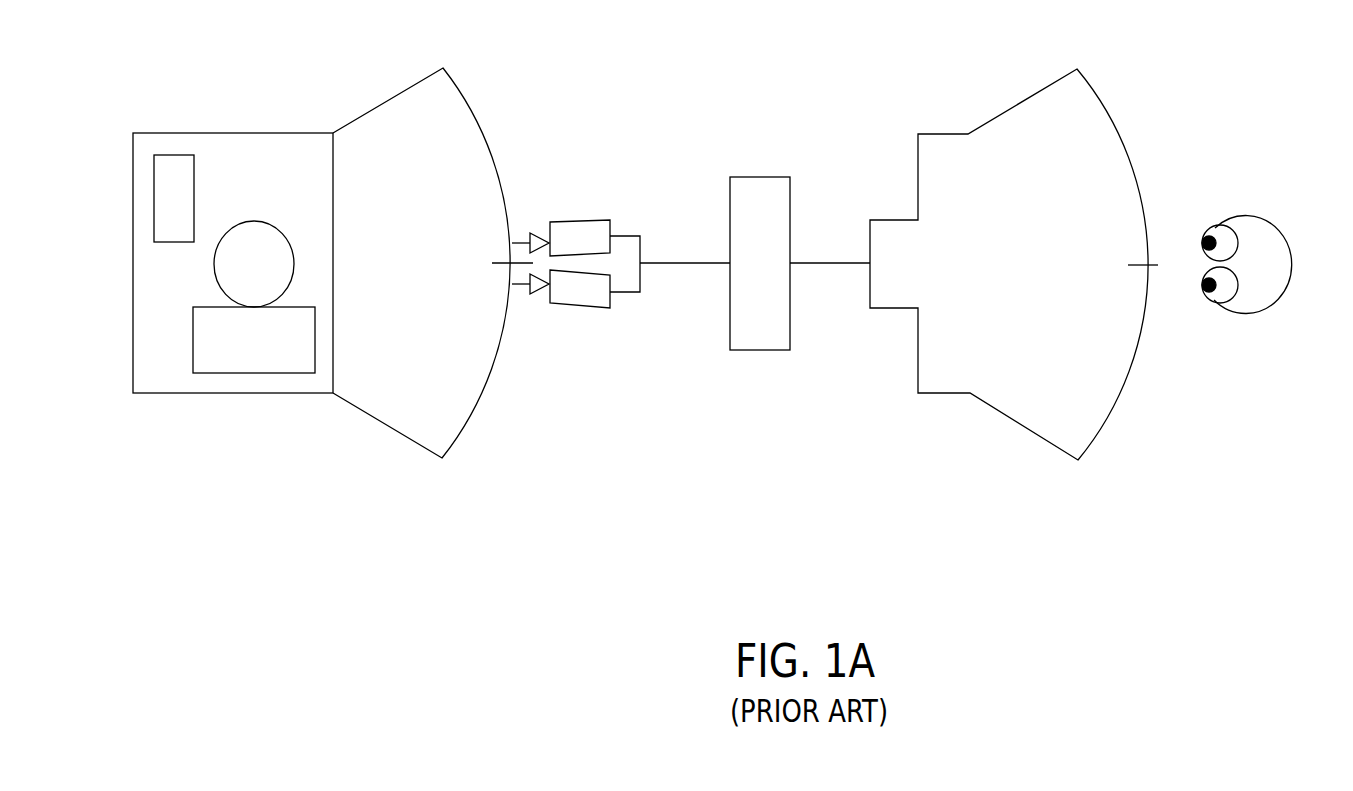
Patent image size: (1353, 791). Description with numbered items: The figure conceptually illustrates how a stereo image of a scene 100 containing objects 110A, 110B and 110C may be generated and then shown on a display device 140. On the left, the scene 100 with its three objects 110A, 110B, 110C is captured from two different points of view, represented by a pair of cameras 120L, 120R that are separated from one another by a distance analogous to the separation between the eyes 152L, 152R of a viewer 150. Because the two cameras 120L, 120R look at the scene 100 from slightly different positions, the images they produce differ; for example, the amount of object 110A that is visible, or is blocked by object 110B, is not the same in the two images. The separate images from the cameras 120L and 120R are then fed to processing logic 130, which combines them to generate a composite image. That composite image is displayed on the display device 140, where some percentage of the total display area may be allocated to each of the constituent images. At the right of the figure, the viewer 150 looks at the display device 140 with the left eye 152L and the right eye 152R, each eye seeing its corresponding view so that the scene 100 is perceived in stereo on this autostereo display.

The scene 100 is at (242, 100).
The object 110A is at (173, 155).
The object 110B is at (270, 221).
The object 110C is at (253, 373).
The camera 120R is at (575, 222).
The camera 120L is at (577, 308).
The processing logic 130 is at (758, 350).
The display device 140 is at (945, 134).
The viewer 150 is at (1283, 205).
The eye 152R is at (1200, 208).
The eye 152L is at (1207, 315).